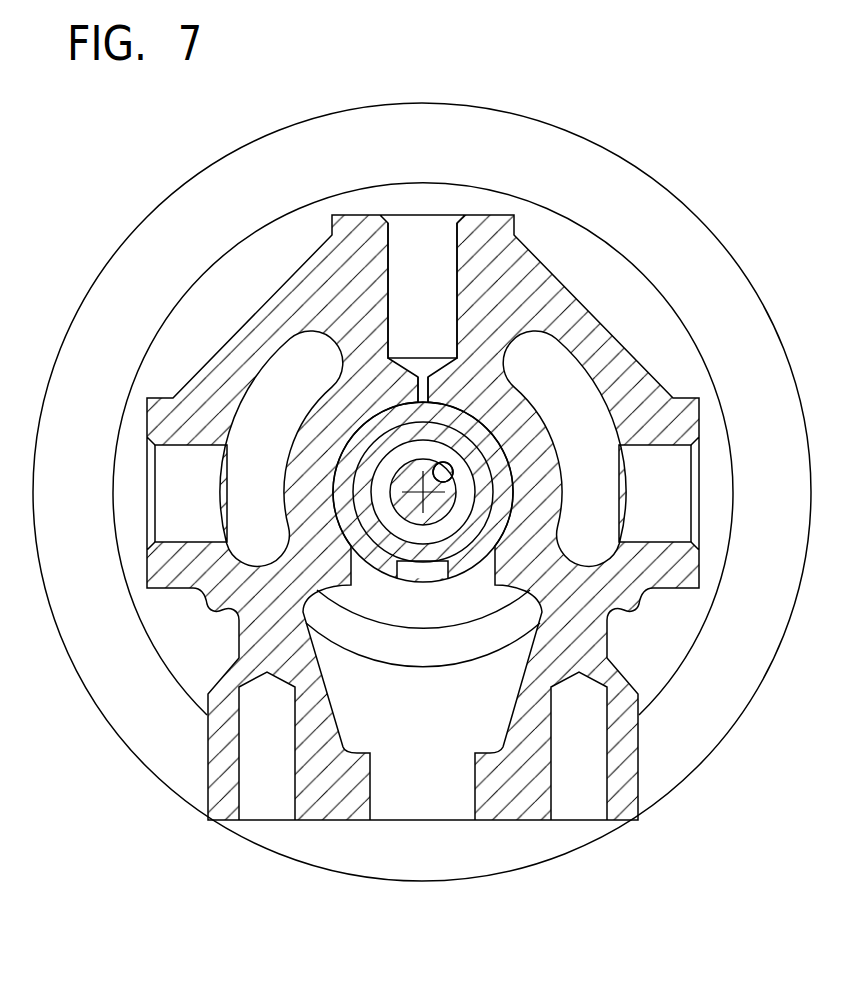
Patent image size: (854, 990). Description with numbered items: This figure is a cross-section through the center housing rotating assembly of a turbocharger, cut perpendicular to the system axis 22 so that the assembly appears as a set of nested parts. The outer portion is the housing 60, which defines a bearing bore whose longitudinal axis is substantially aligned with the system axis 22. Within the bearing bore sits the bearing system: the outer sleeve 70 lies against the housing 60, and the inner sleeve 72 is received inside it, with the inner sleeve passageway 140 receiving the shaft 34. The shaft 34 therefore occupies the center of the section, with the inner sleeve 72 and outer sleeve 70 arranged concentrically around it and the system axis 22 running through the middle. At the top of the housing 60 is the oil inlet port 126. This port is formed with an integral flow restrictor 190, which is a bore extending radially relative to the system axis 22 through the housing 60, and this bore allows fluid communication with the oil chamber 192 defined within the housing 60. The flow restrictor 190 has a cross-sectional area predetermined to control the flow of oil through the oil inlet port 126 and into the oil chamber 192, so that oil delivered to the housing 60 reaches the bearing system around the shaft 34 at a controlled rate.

The housing 60 is at (292, 306).
The oil inlet port 126 is at (414, 247).
The flow restrictor 190 is at (417, 383).
The oil chamber 192 is at (410, 400).
The inner sleeve 72 is at (385, 475).
The outer sleeve 70 is at (340, 487).
The shaft 34 is at (405, 507).
The inner sleeve passageway 140 is at (452, 474).
The system axis 22 is at (428, 498).